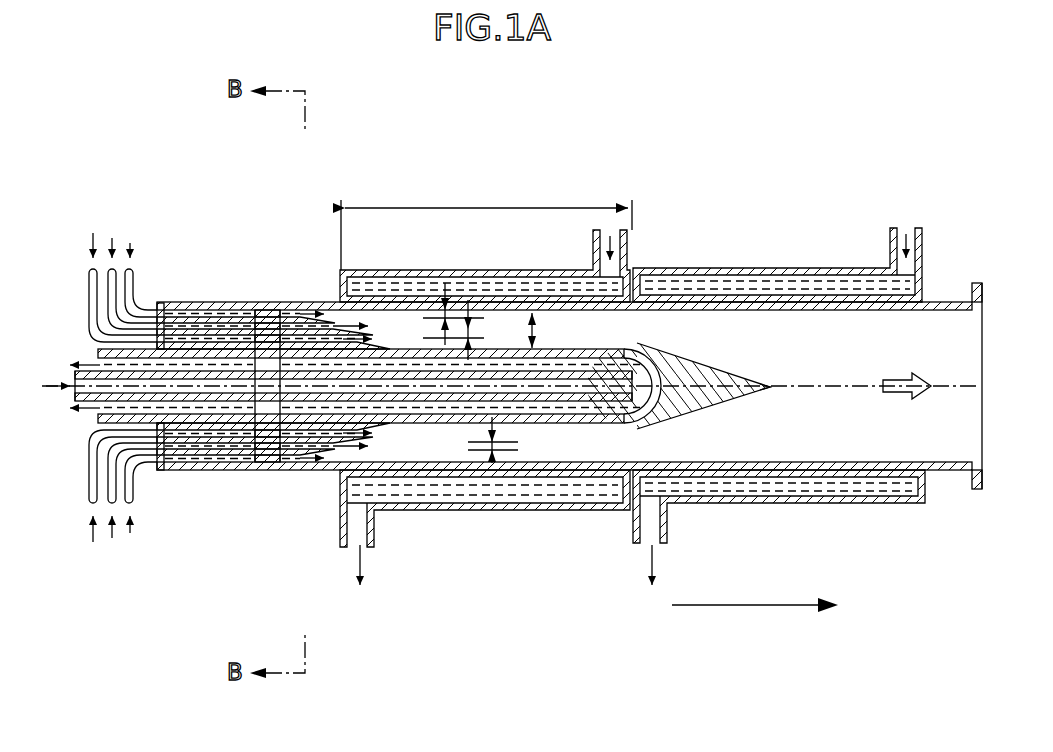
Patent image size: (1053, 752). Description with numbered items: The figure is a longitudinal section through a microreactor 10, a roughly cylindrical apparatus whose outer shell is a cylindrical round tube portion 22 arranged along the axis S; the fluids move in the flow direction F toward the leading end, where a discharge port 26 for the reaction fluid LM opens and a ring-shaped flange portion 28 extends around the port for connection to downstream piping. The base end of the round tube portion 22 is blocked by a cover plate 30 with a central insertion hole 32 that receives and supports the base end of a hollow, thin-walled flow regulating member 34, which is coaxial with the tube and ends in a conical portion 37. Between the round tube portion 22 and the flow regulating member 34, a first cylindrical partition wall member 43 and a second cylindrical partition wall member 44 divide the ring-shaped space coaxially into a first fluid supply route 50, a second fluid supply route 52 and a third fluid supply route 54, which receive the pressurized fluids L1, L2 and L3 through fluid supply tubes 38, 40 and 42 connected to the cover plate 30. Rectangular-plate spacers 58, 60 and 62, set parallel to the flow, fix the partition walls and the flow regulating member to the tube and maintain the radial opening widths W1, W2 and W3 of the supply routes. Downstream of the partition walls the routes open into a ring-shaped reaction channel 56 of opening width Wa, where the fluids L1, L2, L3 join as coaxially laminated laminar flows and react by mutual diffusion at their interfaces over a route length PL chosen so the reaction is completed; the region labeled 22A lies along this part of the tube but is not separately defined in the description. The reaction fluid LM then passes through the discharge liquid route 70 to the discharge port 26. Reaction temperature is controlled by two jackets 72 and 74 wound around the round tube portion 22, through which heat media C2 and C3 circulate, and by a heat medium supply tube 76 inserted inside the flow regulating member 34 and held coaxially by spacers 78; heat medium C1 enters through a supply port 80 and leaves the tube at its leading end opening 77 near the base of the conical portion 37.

The microreactor 10 is at (196, 126).
The round tube portion 22 is at (783, 474).
The annular chamber 22A is at (410, 320).
The discharge port 26 is at (985, 420).
The flange portion 28 is at (982, 492).
The cover plate 30 is at (150, 458).
The insertion hole 32 is at (188, 467).
The flow regulating member 34 is at (587, 425).
The conical portion 37 is at (748, 383).
The fluid supply tube 38 is at (134, 282).
The fluid supply tube 40 is at (134, 309).
The fluid supply tube 42 is at (90, 272).
The first cylindrical partition wall member 43 is at (287, 330).
The second cylindrical partition wall member 44 is at (292, 336).
The first fluid supply route 50 is at (230, 458).
The second fluid supply route 52 is at (215, 463).
The third fluid supply route 54 is at (228, 463).
The reaction channel 56 is at (433, 440).
The spacers 58 is at (273, 460).
The spacers 60 is at (265, 335).
The spacers 62 is at (258, 345).
The discharge liquid route 70 is at (893, 363).
The jacket 72 is at (535, 268).
The jacket 74 is at (740, 268).
The heat medium supply tube 76 is at (633, 348).
The leading end opening 77 is at (660, 410).
The spacers 78 is at (258, 368).
The supply port 80 is at (78, 378).
The heat medium C1 is at (80, 362).
The heat medium C2 is at (610, 228).
The heat medium C3 is at (906, 226).
The fluid L1 is at (302, 515).
The fluid L2 is at (348, 326).
The fluid L3 is at (322, 491).
The route length PL is at (486, 224).
The opening width W1 is at (471, 314).
The opening width W2 is at (513, 440).
The opening width W3 is at (471, 330).
The opening width Wa is at (550, 330).
The axis S is at (992, 384).
The reaction fluid LM is at (898, 392).
The flow direction F is at (765, 607).